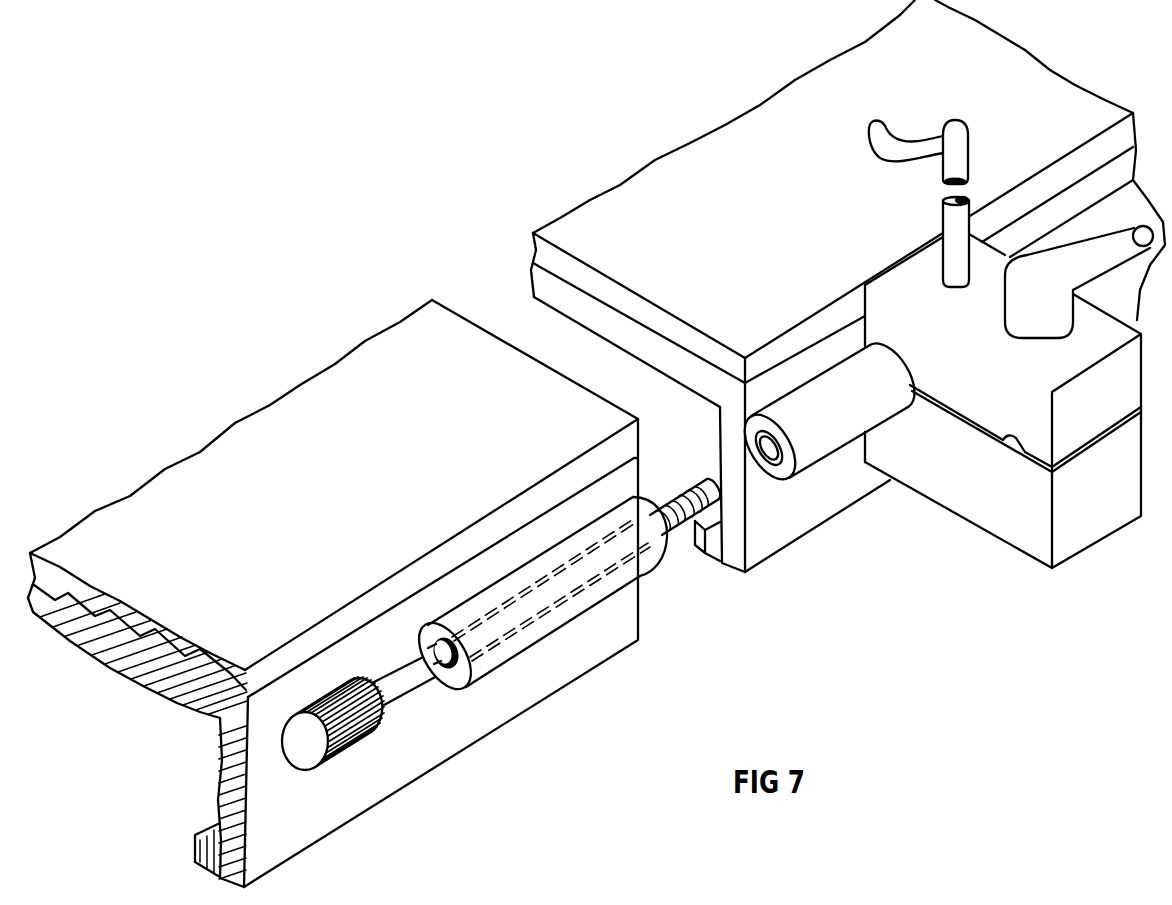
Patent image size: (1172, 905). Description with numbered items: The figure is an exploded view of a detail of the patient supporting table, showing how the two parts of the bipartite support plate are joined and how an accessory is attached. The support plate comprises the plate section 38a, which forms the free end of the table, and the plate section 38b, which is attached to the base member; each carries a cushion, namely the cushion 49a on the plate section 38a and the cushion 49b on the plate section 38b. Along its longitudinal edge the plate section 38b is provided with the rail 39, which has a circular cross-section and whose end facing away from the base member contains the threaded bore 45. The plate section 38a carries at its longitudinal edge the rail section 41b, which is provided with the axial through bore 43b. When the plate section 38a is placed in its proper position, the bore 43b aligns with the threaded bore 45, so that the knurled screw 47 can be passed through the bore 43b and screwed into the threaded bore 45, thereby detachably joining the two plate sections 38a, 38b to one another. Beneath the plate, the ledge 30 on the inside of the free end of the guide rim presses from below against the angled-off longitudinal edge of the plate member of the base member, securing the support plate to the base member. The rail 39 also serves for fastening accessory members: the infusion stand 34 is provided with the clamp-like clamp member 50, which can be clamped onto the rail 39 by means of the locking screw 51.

The ledge 30 is at (708, 543).
The infusion stand 34 is at (950, 138).
The plate section 38a is at (152, 683).
The plate section 38b is at (587, 318).
The rail 39 is at (827, 440).
The rail section 41b is at (555, 620).
The bore 43b is at (500, 643).
The threaded bore 45 is at (773, 462).
The knurled screw 47 is at (357, 750).
The cushion 49a is at (294, 400).
The cushion 49b is at (663, 160).
The clamp member 50 is at (952, 498).
The locking screw 51 is at (1050, 298).